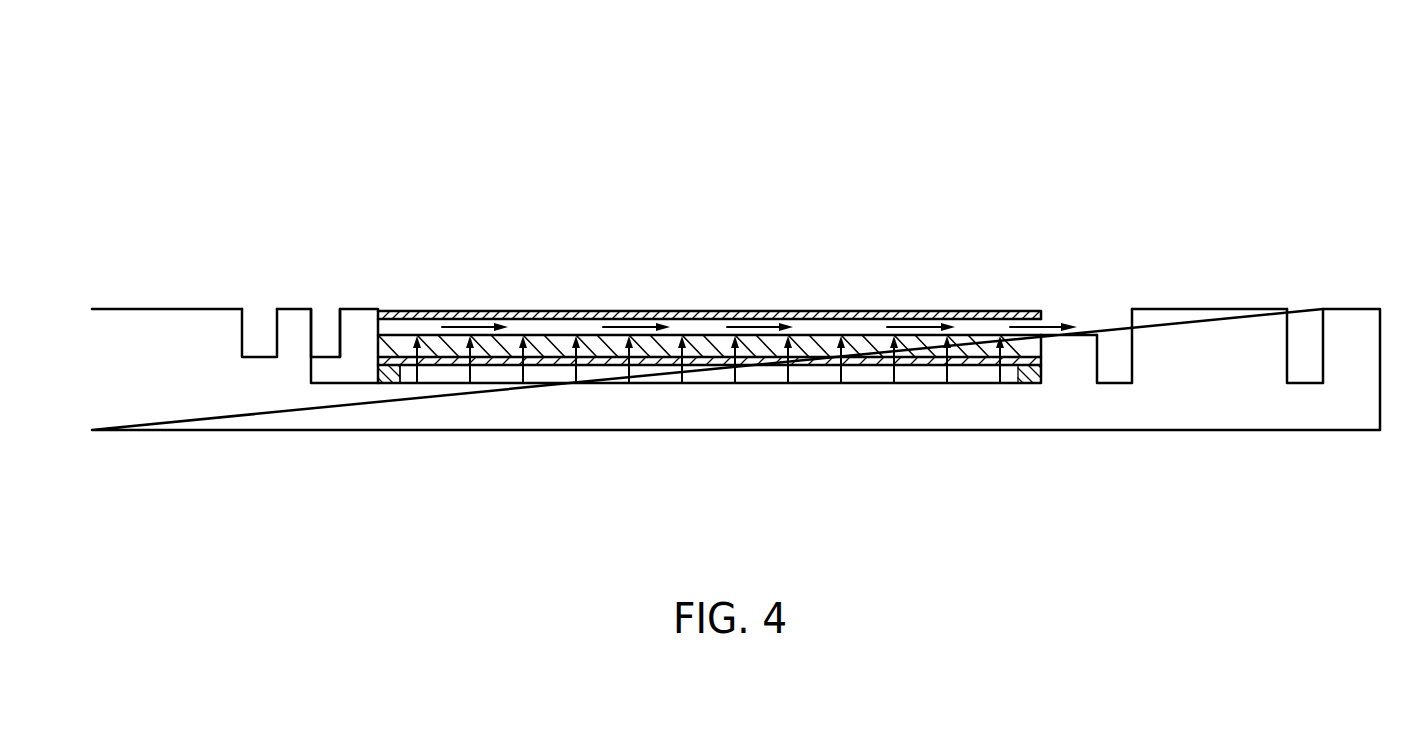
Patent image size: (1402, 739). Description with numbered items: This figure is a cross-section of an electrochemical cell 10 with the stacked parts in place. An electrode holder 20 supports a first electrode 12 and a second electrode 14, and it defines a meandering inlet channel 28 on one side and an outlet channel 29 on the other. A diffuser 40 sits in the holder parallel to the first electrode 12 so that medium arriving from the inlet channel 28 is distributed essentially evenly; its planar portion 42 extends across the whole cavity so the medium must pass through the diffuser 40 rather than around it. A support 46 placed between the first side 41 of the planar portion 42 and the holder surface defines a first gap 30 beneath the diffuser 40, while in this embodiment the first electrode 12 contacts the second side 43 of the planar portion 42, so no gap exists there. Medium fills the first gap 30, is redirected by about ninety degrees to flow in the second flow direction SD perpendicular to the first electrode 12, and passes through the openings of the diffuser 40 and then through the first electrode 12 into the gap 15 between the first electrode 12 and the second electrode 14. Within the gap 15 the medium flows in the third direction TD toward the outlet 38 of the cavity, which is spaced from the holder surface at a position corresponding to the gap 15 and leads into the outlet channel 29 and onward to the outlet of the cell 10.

The electrochemical cell 10 is at (213, 128).
The first electrode 12 is at (531, 340).
The second electrode 14 is at (842, 313).
The gap 15 is at (560, 328).
The electrode holder 20 is at (253, 400).
The inlet channel 28 is at (325, 325).
The outlet channel 29 is at (1303, 328).
The first gap 30 is at (868, 375).
The outlet of the cavity 38 is at (1070, 317).
The diffuser 40 is at (607, 368).
The first side 41 is at (553, 370).
The planar portion 42 is at (915, 362).
The second side 43 is at (671, 348).
The support 46 is at (1033, 377).
The third direction TD is at (1053, 325).
The second flow direction SD is at (682, 372).